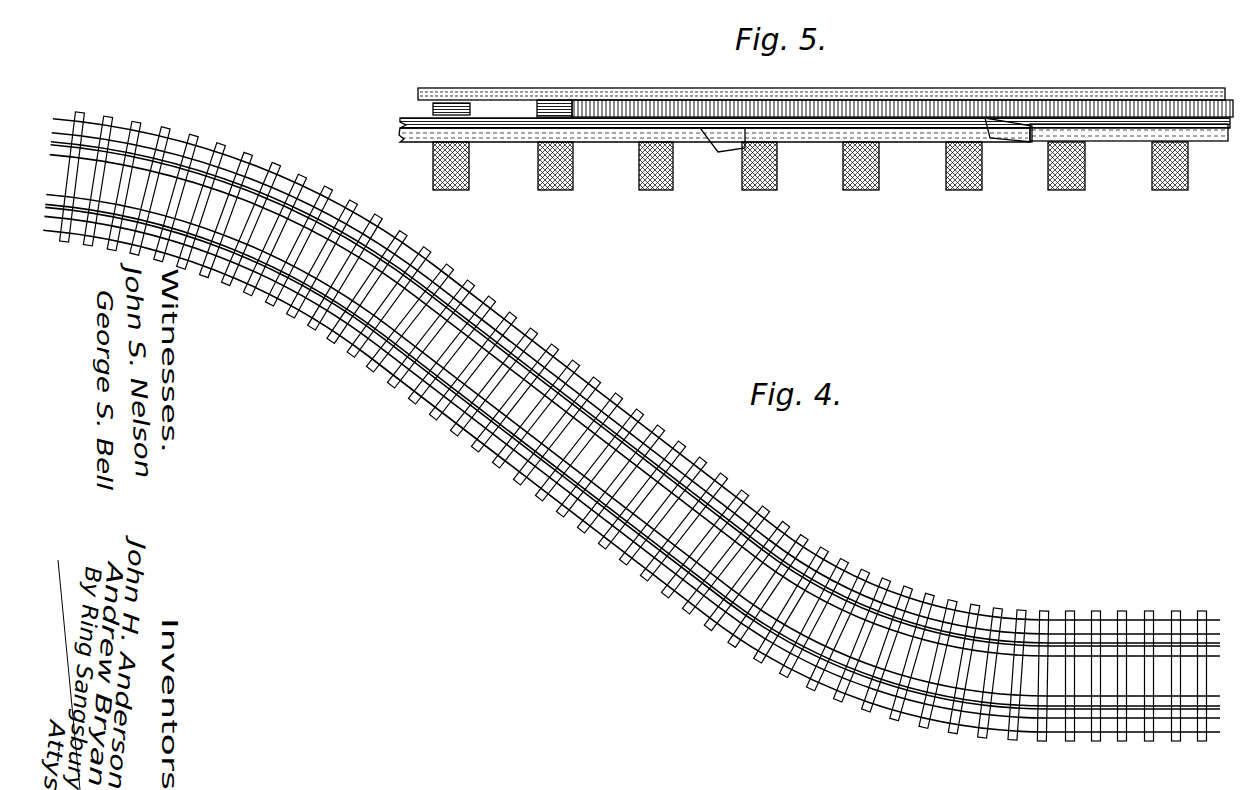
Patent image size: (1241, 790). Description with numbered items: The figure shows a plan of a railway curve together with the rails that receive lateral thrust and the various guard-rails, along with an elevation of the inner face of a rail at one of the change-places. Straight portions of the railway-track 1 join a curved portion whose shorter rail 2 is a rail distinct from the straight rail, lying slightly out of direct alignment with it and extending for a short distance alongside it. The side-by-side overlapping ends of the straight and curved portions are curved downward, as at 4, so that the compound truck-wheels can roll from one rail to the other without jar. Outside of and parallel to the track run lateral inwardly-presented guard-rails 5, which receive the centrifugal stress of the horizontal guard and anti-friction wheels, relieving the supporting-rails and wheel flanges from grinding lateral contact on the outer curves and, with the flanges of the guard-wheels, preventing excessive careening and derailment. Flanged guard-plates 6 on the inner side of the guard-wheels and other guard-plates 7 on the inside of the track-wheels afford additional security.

In FIG. 5, the straight portion of railway-track 1 is at (1206, 137).
In FIG. 4, the straight portion of railway-track 1 is at (588, 408).
In FIG. 5, the shorter rail of curved portion 2 is at (627, 130).
In FIG. 4, the shorter rail of curved portion 2 is at (915, 616).
In FIG. 5, the downward-curved rail end 4 is at (732, 148).
In FIG. 5, the lateral guard-rail 5 is at (821, 89).
In FIG. 4, the lateral guard-rail 5 is at (513, 327).
In FIG. 5, the flanged guard-plate 6 is at (626, 104).
In FIG. 4, the flanged guard-plate 6 is at (638, 430).
In FIG. 4, the guard-plate 7 is at (640, 429).